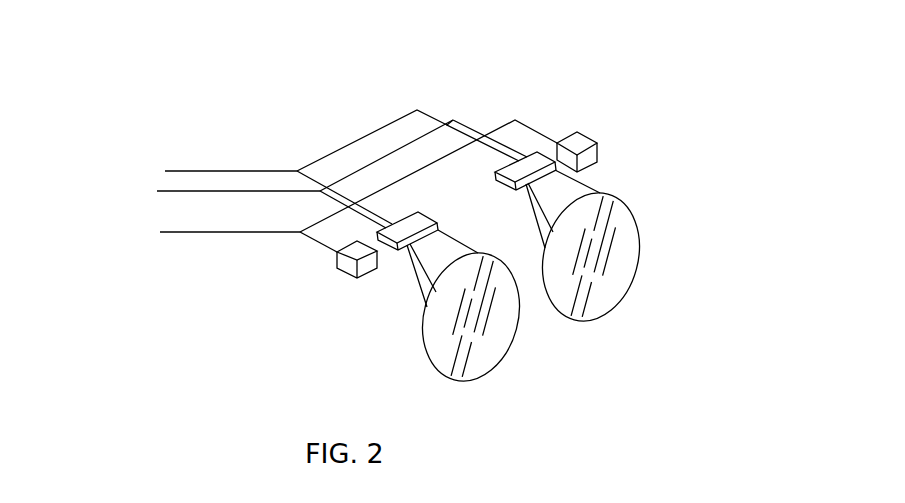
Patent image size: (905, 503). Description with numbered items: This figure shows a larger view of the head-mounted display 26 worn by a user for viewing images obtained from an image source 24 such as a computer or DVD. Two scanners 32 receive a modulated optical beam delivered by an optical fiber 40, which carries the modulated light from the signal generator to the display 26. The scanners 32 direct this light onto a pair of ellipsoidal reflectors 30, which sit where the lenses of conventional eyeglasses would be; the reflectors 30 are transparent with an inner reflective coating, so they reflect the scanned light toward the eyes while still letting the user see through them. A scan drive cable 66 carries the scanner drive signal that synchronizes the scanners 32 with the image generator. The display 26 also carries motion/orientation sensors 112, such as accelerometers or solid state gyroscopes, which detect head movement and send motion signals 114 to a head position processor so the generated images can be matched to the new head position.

The head-mounted display 26 is at (360, 106).
The scanners 32 is at (424, 202).
The image source 24 is at (608, 112).
The motion/orientation sensor 112 is at (357, 278).
The ellipsoidal reflectors 30 is at (522, 352).
The optical fiber 40 is at (297, 171).
The scan drive cable 66 is at (157, 191).
The motion signals 114 is at (160, 234).